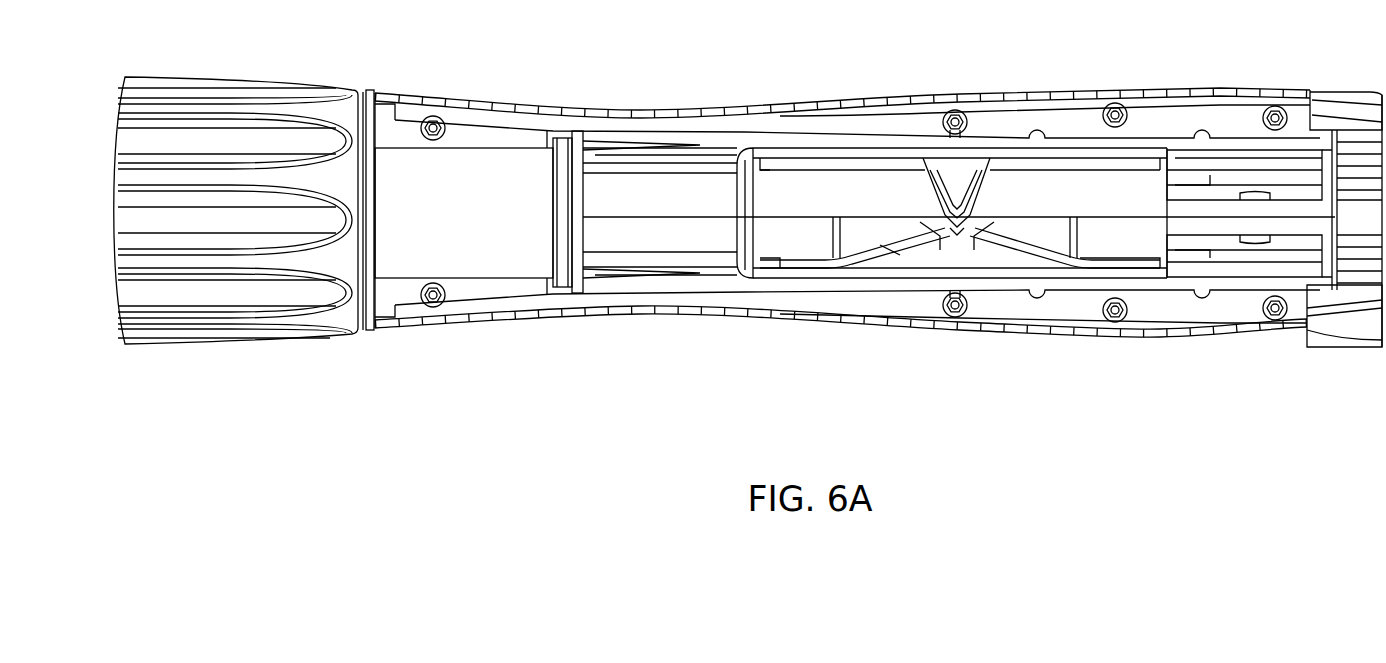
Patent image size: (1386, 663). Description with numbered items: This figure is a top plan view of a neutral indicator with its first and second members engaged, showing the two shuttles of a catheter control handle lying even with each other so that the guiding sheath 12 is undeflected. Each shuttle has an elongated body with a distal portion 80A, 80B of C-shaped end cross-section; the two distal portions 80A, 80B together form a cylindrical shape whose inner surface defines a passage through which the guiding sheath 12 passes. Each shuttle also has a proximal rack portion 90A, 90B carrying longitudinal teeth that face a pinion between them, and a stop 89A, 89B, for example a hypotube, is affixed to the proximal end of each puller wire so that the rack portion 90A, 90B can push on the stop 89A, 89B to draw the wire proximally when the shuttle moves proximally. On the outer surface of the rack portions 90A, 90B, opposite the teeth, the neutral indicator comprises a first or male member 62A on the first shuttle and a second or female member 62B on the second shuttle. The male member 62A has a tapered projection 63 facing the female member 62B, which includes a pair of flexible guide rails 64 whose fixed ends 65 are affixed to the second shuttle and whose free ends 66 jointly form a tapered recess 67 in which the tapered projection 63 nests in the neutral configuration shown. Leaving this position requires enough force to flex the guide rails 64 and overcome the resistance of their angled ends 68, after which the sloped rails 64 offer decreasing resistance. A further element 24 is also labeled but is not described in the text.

The guiding sheath 12 is at (1270, 220).
The housing 24 is at (1046, 92).
The first member 62A is at (858, 165).
The second member 62B is at (1043, 232).
The tapered projection 63 is at (955, 210).
The flexible guide rails 64 is at (838, 245).
The fixed ends 65 is at (768, 268).
The free ends 66 is at (895, 243).
The tapered recess 67 is at (957, 236).
The angled ends 68 is at (921, 227).
The distal portion 80A is at (635, 187).
The distal portion 80B is at (648, 240).
The stop 89A is at (1210, 182).
The stop 89B is at (1210, 245).
The proximal rack portion 90A is at (772, 145).
The proximal rack portion 90B is at (852, 282).